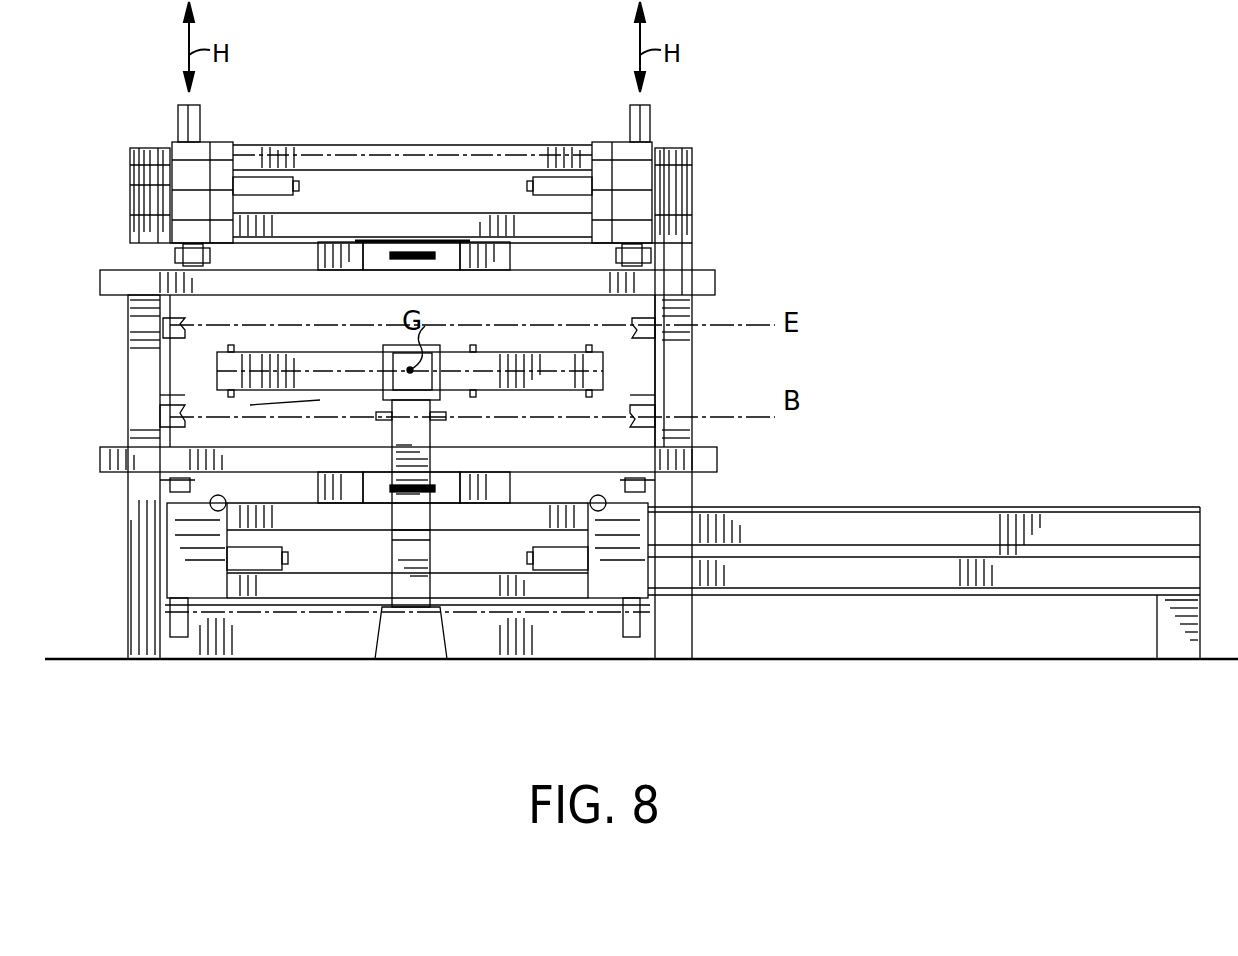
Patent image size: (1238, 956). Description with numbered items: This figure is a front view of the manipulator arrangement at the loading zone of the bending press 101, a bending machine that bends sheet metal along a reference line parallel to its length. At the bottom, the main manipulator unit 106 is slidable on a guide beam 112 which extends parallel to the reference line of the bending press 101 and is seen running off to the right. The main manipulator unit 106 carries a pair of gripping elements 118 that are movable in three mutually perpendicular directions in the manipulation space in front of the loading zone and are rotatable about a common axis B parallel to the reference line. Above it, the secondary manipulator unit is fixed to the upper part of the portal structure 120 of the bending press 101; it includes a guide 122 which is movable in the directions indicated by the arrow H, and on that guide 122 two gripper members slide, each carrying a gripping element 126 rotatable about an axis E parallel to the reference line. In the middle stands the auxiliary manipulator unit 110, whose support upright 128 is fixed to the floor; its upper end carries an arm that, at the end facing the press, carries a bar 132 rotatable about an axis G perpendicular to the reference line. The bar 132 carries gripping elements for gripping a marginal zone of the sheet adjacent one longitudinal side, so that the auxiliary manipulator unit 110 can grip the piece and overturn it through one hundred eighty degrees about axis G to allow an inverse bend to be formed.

The bending press 101 is at (708, 150).
The portal structure 120 is at (135, 185).
The guide 122 is at (715, 280).
The gripping element 126 is at (185, 330).
The bar 132 is at (500, 353).
The auxiliary manipulator unit 110 is at (362, 398).
The gripping elements 118 is at (160, 393).
The support upright 128 is at (410, 563).
The main manipulator unit 106 is at (598, 590).
The guide beam 112 is at (920, 525).